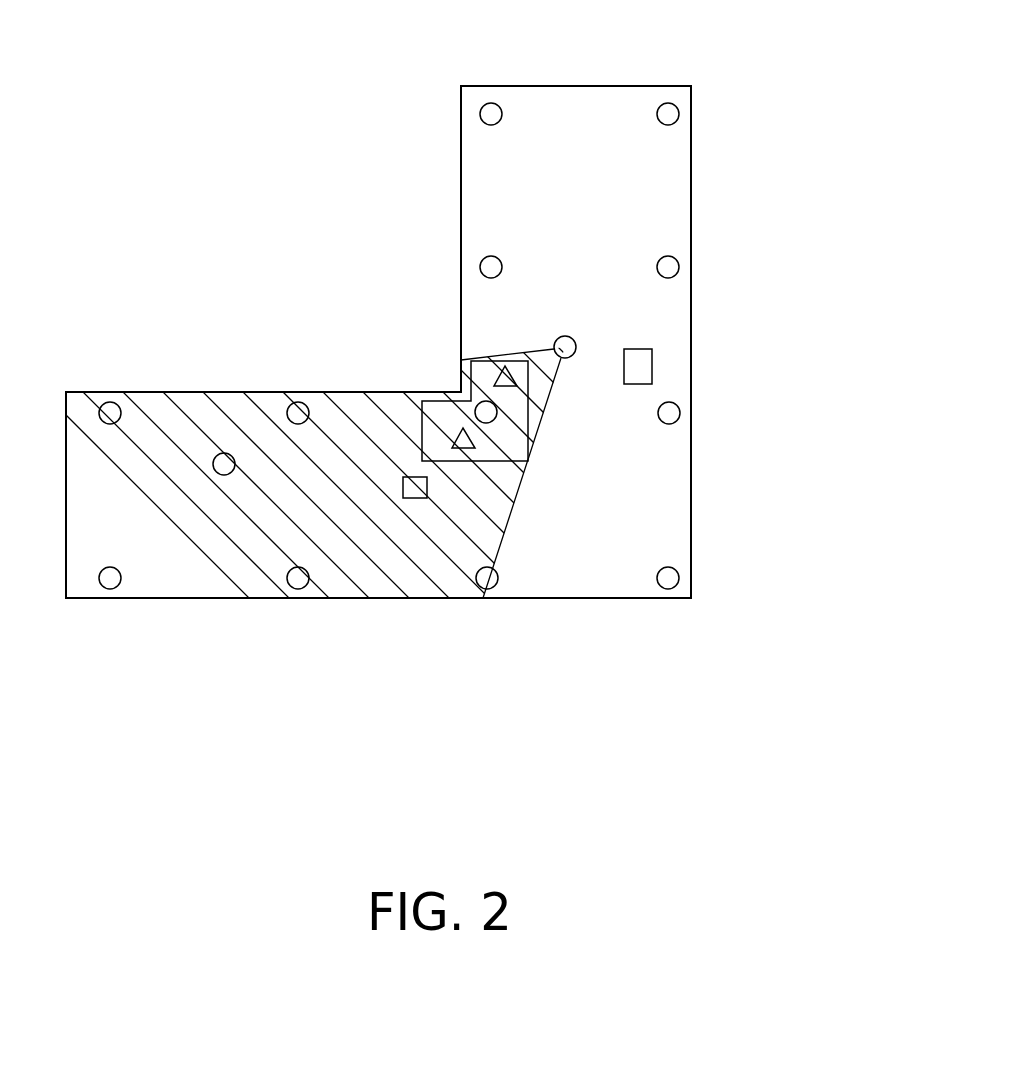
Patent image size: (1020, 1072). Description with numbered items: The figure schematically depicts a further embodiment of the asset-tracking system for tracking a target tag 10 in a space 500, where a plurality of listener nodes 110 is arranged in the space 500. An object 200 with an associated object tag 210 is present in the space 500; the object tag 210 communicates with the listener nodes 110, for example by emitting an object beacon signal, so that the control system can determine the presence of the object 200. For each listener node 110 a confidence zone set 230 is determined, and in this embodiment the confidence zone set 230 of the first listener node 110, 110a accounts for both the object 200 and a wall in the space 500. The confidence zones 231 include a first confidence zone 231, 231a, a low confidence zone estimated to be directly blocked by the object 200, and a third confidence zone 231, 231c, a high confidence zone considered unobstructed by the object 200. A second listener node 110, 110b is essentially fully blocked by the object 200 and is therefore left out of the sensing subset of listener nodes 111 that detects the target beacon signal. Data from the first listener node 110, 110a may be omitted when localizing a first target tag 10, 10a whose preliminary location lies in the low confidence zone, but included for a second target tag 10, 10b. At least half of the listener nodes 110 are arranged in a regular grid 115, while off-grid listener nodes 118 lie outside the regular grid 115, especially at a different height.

The target tag 10 is at (567, 512).
The first target tag 10a is at (400, 473).
The second target tag 10b is at (656, 367).
The listener node 110 is at (654, 354).
The first listener node 110a is at (583, 335).
The second listener node 110b is at (486, 412).
The sensing subset of listener nodes 111 is at (494, 92).
The regular grid 115 is at (759, 530).
The off-grid listener node 118 is at (224, 450).
The object 200 is at (522, 456).
The object tag 210 is at (451, 426).
The confidence zone set 230 is at (466, 600).
The confidence zone 231 is at (405, 551).
The first confidence zone 231a is at (207, 600).
The third confidence zone 231c is at (613, 600).
The space 500 is at (599, 283).